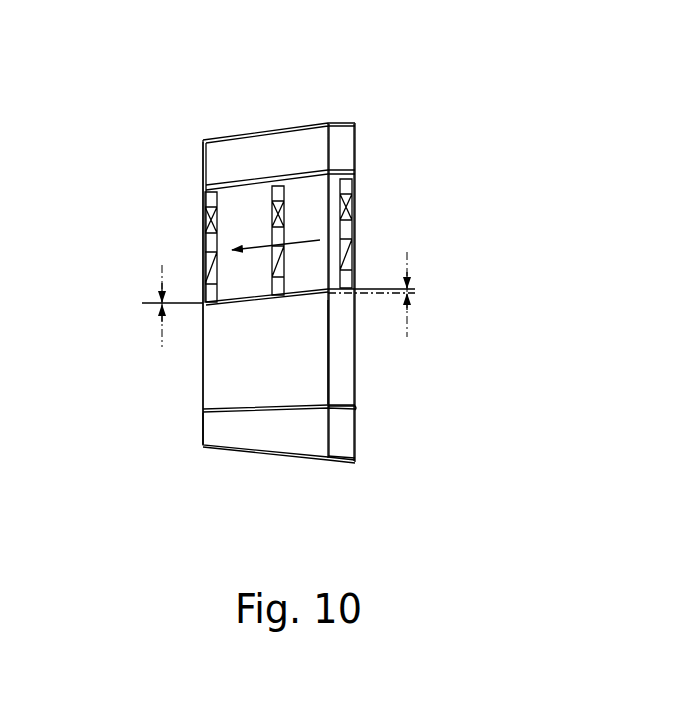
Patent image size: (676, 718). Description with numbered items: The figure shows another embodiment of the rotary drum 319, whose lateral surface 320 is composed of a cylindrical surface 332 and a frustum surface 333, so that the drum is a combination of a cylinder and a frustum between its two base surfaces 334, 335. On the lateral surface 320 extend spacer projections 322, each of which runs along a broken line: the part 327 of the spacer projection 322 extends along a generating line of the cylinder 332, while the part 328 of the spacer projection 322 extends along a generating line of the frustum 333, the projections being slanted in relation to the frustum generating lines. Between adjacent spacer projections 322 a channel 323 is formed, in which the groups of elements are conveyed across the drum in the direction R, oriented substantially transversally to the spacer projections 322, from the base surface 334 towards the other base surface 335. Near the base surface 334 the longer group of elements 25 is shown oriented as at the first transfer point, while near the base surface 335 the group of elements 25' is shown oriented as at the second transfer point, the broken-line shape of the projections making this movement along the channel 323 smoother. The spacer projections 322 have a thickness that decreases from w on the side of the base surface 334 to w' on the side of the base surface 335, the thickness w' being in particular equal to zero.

The drum 319 is at (310, 110).
The lateral surface 320 is at (257, 148).
The base surface 335 is at (187, 158).
The base surface 334 is at (370, 152).
The group of elements 25' is at (146, 242).
The group of elements 25 is at (411, 228).
The channel 323 is at (327, 380).
The part of the spacer projection 328 is at (232, 413).
The part of the spacer projection 327 is at (350, 412).
The spacer projection 322 is at (257, 420).
The frustum surface 333 is at (287, 440).
The cylindrical surface 332 is at (342, 443).
The thickness w is at (389, 298).
The thickness w' is at (165, 310).
The direction R is at (276, 229).